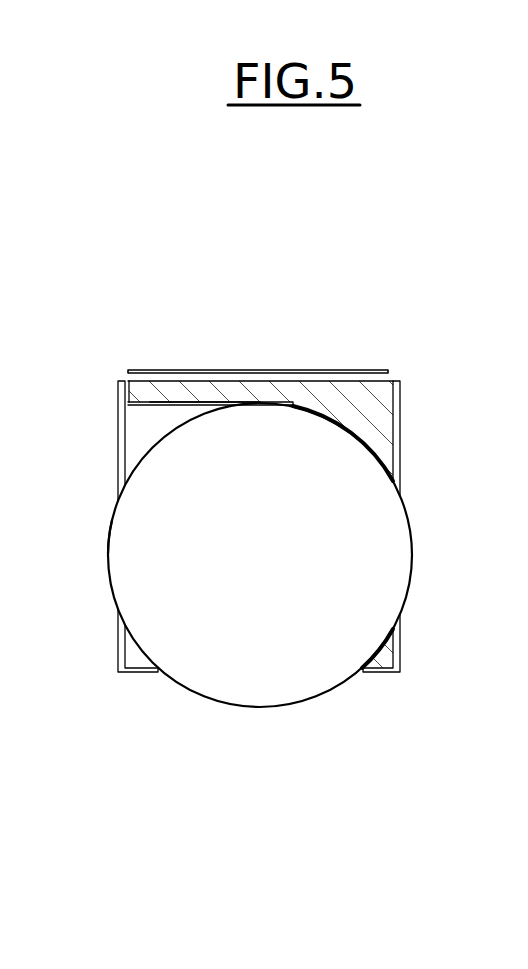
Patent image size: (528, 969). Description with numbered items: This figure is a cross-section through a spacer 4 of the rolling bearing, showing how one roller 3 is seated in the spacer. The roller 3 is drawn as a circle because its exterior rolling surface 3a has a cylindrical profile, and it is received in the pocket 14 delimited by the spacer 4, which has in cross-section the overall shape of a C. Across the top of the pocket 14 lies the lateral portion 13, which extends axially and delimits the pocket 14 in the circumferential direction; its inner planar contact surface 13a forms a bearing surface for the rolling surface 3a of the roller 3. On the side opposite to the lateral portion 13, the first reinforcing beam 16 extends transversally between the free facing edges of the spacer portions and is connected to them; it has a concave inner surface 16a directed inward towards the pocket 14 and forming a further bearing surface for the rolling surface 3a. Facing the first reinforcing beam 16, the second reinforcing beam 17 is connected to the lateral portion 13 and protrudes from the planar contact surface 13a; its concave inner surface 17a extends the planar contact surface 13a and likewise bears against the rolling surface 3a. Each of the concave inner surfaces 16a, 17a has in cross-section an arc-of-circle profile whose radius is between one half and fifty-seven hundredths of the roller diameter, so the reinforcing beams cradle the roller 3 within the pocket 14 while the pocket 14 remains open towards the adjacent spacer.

The roller 3 is at (251, 558).
The rolling surface 3a is at (108, 553).
The spacer 4 is at (135, 349).
The lateral portion 13 is at (243, 395).
The inner planar contact surface 13a is at (183, 403).
The pocket 14 is at (142, 426).
The first reinforcing beam 16 is at (384, 663).
The concave inner surface 16a is at (377, 652).
The second reinforcing beam 17 is at (383, 417).
The concave inner surface 17a is at (342, 427).